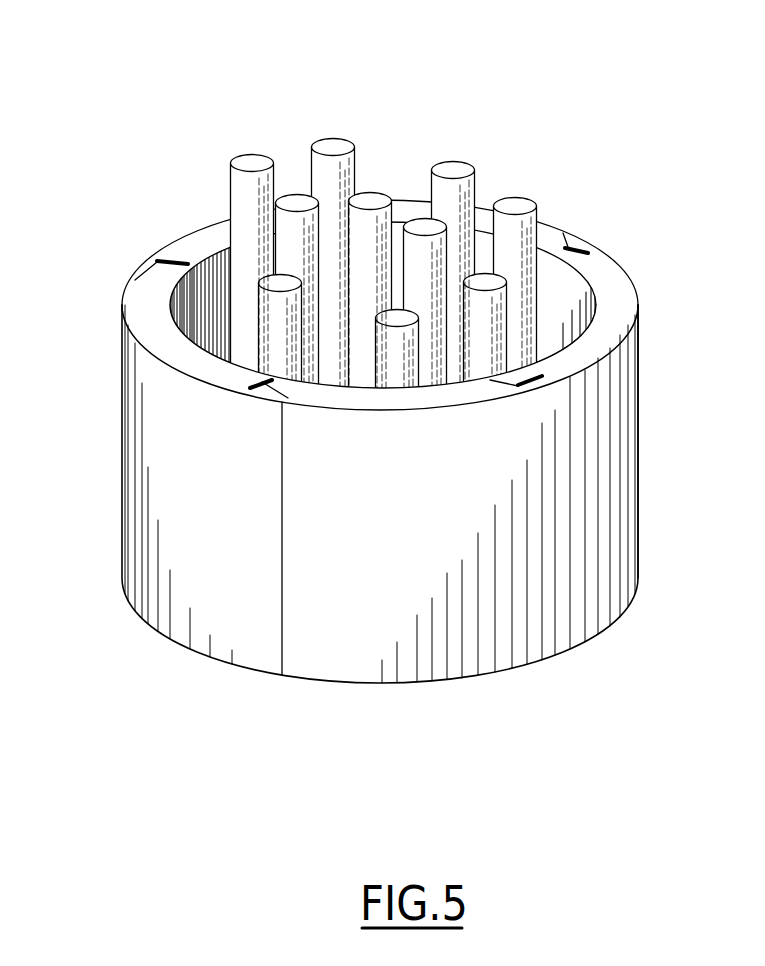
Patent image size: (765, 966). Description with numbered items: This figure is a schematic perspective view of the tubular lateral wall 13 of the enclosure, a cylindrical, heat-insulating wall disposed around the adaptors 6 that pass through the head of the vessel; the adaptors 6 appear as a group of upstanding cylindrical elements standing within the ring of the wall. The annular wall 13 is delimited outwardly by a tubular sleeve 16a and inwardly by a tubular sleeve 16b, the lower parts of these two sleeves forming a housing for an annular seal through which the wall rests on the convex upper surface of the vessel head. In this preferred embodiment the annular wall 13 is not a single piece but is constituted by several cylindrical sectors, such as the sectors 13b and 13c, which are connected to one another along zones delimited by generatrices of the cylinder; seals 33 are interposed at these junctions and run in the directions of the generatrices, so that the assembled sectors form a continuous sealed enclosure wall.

The rod elements 6 is at (522, 203).
The annular lateral wall 13 is at (383, 506).
The cylindrical sector 13b is at (467, 637).
The cylindrical sector 13c is at (615, 580).
The outer tubular sleeve 16a is at (190, 437).
The inner tubular sleeve 16b is at (168, 302).
The seals 33 is at (480, 395).